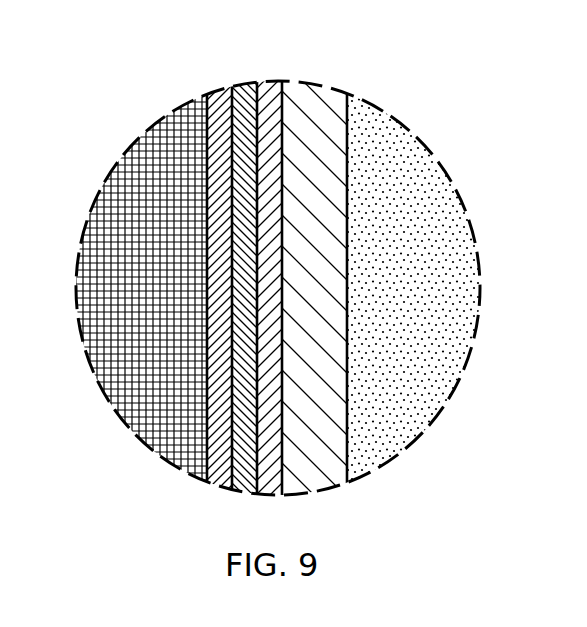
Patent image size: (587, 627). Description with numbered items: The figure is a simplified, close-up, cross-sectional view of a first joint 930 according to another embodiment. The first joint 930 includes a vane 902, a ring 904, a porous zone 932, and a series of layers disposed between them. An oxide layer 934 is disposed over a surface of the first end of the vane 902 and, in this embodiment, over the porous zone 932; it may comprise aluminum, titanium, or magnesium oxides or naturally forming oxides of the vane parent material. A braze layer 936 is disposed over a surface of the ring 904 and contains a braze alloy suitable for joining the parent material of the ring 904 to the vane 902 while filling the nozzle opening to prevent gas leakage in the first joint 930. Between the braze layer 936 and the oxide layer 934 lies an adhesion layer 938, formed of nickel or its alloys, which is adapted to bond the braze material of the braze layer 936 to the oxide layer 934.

The first joint 930 is at (446, 443).
The vane 902 is at (96, 267).
The ring 904 is at (458, 278).
The porous zone 932 is at (330, 100).
The oxide layer 934 is at (275, 90).
The braze layer 936 is at (215, 96).
The adhesion layer 938 is at (244, 92).